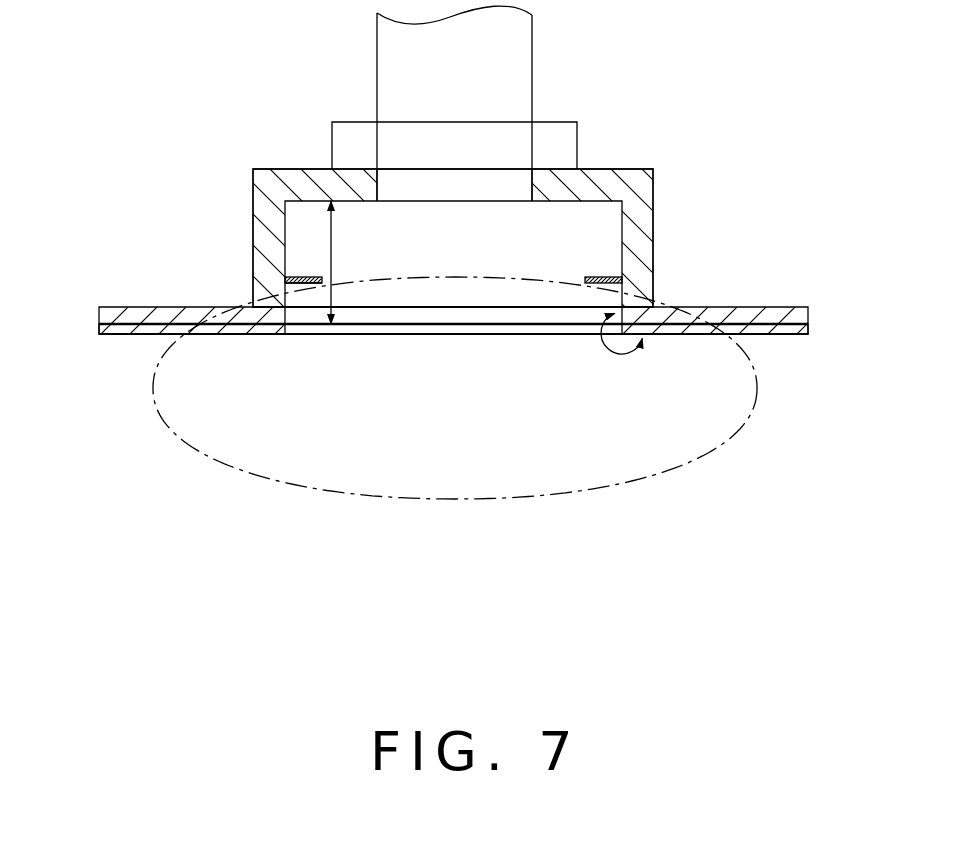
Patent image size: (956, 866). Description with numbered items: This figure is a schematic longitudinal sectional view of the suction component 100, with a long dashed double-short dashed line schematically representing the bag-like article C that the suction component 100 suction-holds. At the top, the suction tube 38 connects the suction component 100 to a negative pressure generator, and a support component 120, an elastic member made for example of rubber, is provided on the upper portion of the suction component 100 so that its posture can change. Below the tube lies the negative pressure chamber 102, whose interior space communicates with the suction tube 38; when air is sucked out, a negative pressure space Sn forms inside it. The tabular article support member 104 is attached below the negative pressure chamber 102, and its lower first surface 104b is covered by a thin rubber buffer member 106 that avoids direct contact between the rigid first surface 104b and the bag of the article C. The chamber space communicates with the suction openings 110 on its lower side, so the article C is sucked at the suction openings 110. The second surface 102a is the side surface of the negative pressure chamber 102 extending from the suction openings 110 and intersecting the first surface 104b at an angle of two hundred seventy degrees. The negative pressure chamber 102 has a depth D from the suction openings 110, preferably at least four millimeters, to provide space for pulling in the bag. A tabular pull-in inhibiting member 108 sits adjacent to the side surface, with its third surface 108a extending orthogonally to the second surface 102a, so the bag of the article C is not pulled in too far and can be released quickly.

The suction tube 38 is at (532, 37).
The suction component 100 is at (186, 149).
The negative pressure chamber 102 is at (248, 262).
The second surface 102a is at (620, 297).
The article support member 104 is at (170, 304).
The first surface 104b is at (778, 334).
The buffer member 106 is at (139, 335).
The pull-in inhibiting member 108 is at (296, 276).
The third surface 108a is at (298, 284).
The suction openings 110 is at (302, 334).
The support component 120 is at (316, 129).
The depth D is at (319, 262).
The negative pressure space Sn is at (468, 253).
The article C is at (452, 498).